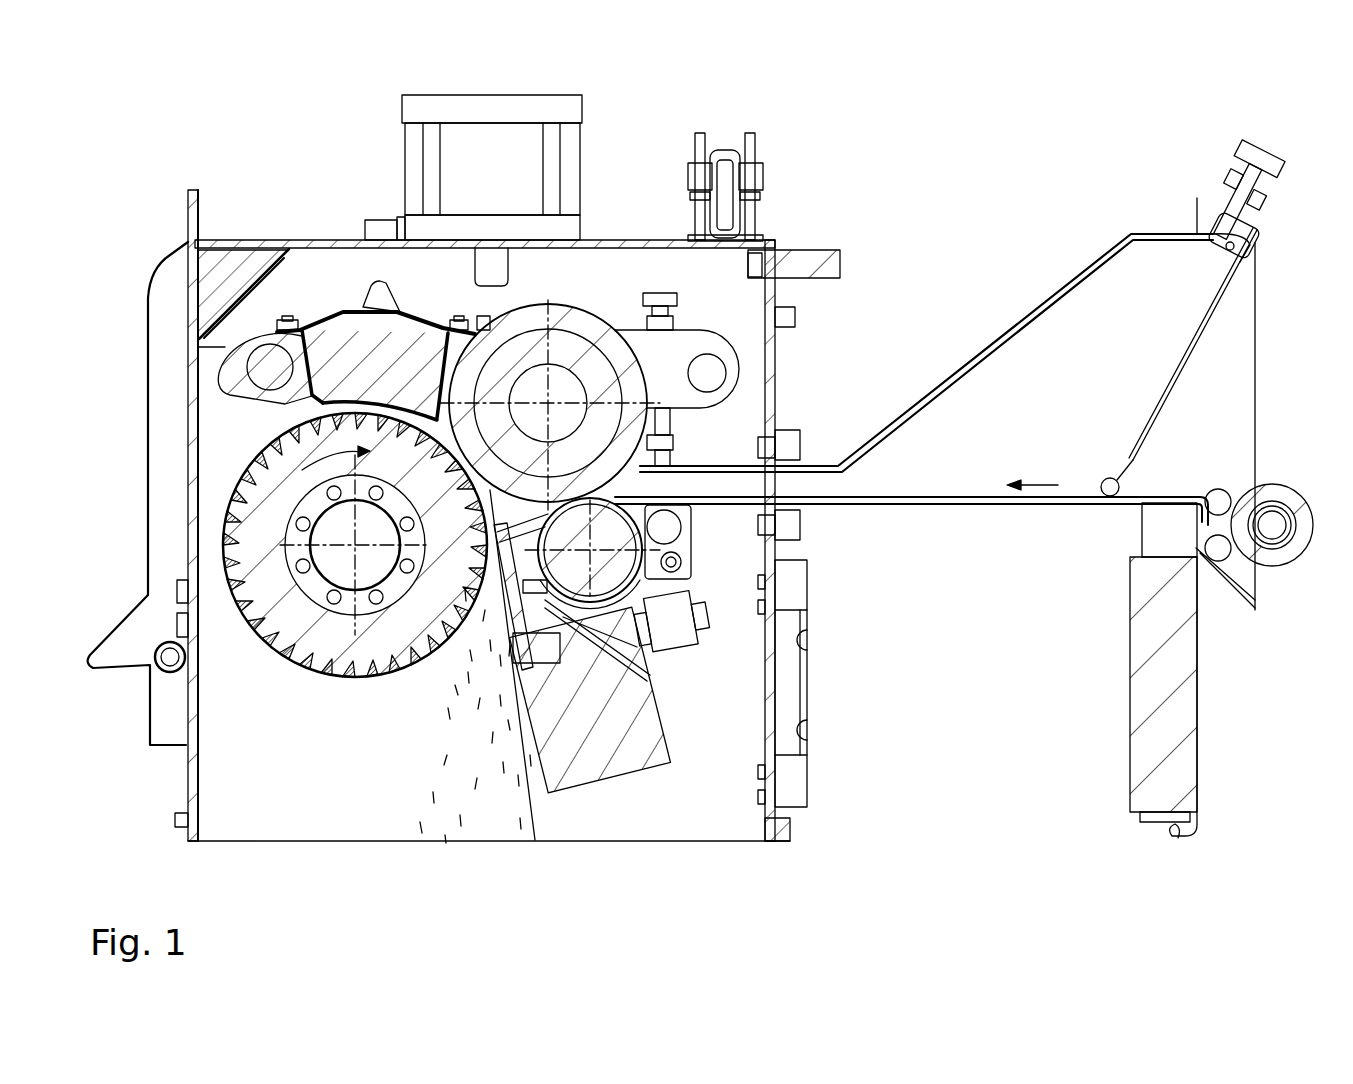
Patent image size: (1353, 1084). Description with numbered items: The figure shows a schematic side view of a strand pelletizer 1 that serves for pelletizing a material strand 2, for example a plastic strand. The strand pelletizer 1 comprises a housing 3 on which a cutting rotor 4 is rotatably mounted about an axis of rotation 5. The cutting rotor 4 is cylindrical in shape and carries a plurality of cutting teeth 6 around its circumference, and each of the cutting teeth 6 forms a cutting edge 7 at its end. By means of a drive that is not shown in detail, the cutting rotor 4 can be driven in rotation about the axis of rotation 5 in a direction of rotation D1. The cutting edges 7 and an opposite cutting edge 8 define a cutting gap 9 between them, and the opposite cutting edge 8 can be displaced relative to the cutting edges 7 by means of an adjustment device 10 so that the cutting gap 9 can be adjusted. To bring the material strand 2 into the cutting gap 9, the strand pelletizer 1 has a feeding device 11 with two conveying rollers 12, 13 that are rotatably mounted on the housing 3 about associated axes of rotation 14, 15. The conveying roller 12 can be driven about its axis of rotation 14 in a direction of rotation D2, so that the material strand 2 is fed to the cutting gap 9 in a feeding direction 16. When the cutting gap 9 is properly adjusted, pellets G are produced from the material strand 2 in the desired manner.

The strand pelletizer 1 is at (859, 165).
The material strand 2 is at (455, 320).
The housing 3 is at (303, 260).
The cutting rotor 4 is at (341, 500).
The axis of rotation 5 is at (298, 658).
The cutting teeth 6 is at (403, 650).
The cutting edge 7 is at (493, 577).
The opposite cutting edge 8 is at (445, 370).
The cutting gap 9 is at (505, 600).
The adjustment device 10 is at (662, 672).
The feeding device 11 is at (598, 385).
The conveying roller 12 is at (537, 380).
The conveying roller 13 is at (630, 700).
The axis of rotation 14 is at (589, 291).
The axis of rotation 15 is at (566, 600).
The feeding direction 16 is at (1035, 485).
The pellets G is at (490, 800).
The direction of rotation D1 is at (294, 410).
The direction of rotation D2 is at (634, 400).